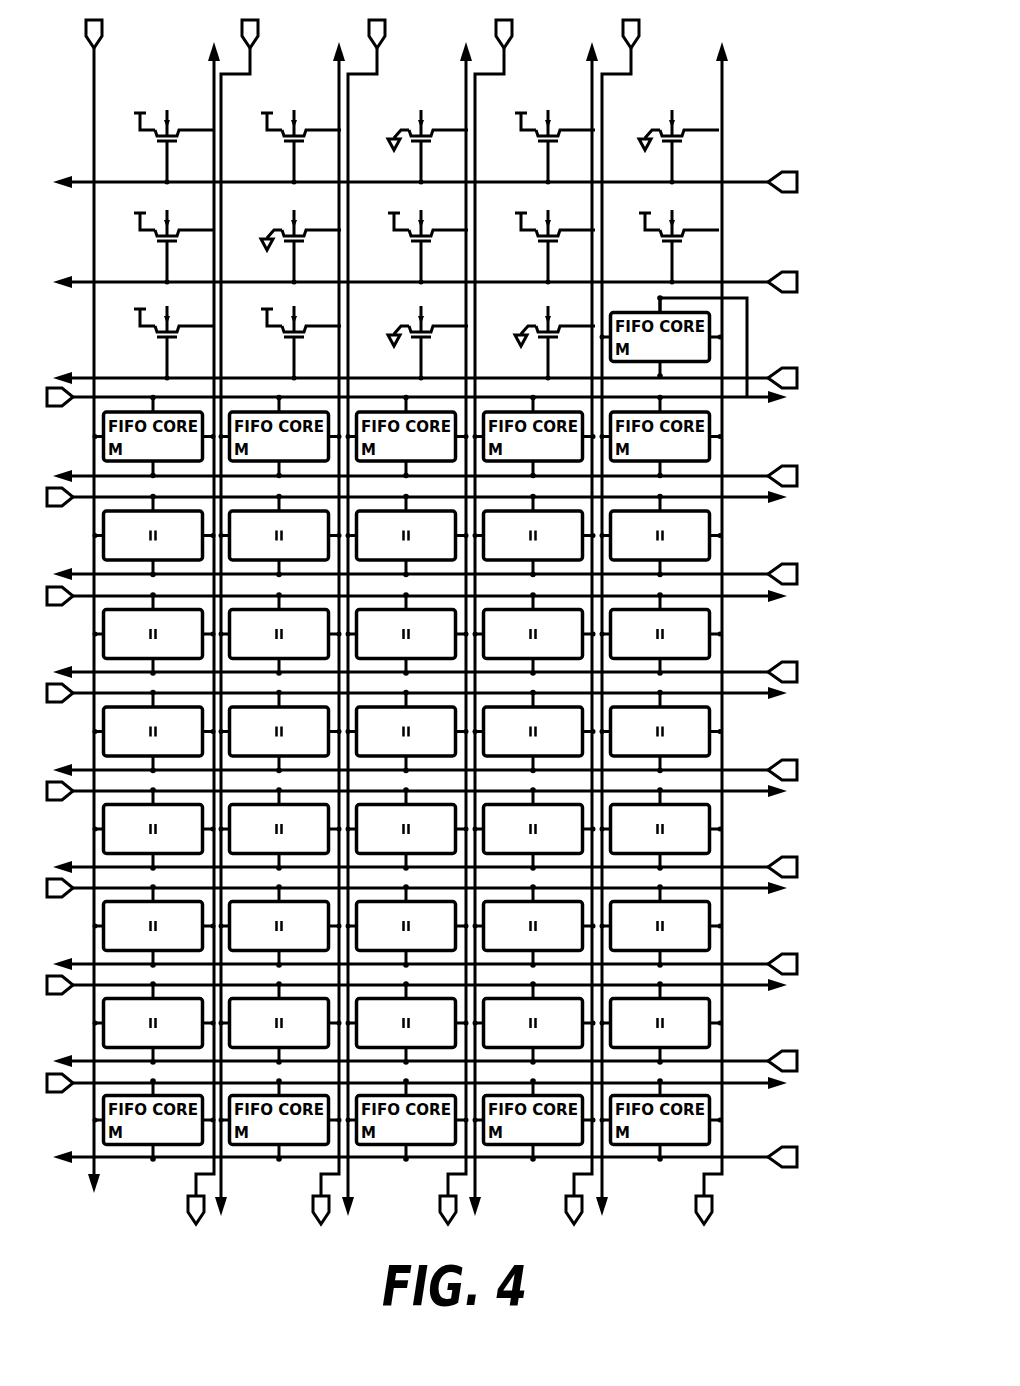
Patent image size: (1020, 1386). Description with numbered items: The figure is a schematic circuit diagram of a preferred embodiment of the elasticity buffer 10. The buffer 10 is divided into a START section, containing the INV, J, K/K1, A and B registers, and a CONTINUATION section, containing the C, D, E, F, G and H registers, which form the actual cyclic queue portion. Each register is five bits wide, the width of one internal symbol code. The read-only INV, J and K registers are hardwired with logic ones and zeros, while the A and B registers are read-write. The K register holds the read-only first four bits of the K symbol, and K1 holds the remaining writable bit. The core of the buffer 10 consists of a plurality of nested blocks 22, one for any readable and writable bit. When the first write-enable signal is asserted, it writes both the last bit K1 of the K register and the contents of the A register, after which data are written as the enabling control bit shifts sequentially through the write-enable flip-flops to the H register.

The elasticity buffer 10 is at (451, 627).
The nested block 22 is at (177, 411).
The last bit of the K register K1 is at (752, 298).